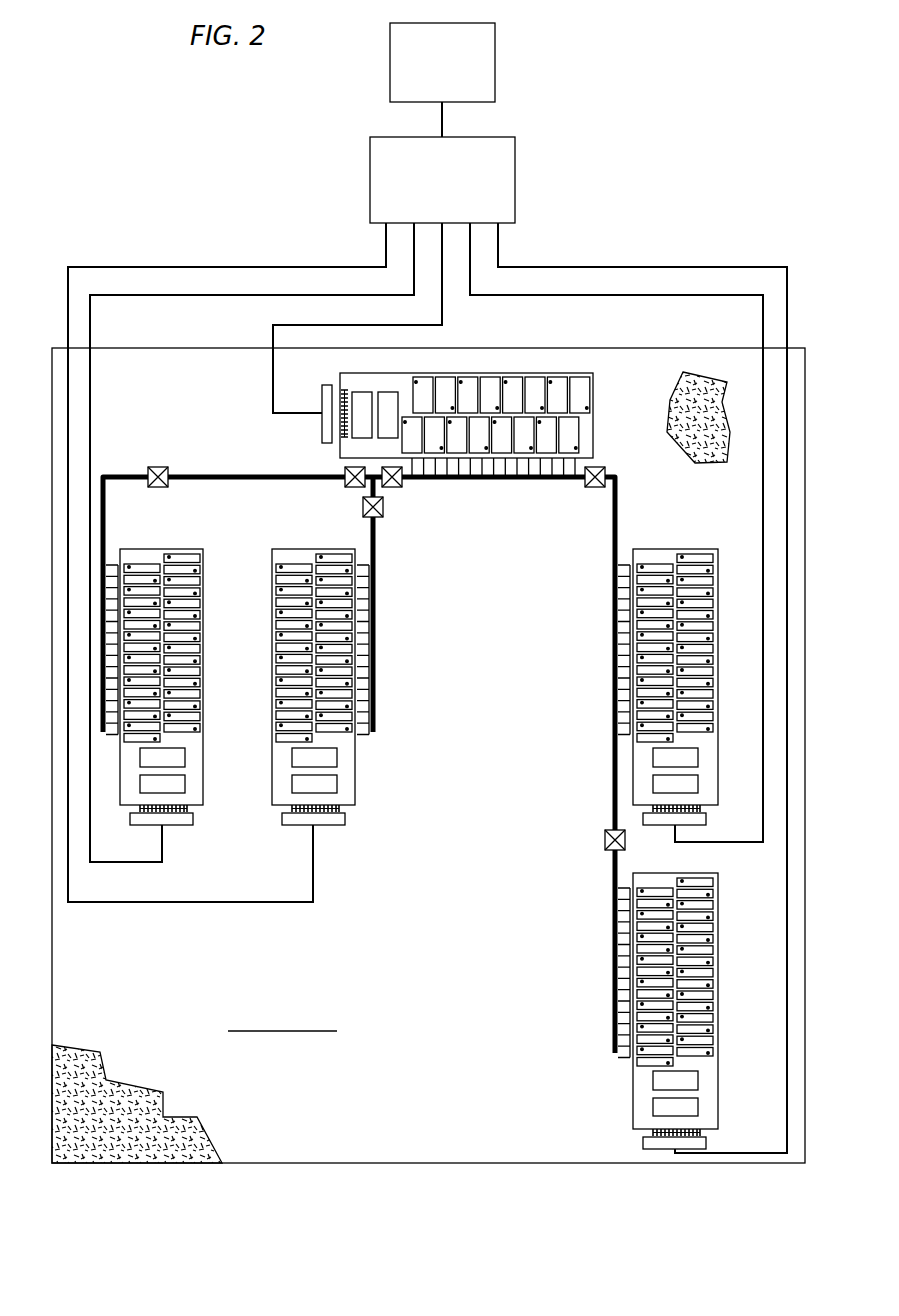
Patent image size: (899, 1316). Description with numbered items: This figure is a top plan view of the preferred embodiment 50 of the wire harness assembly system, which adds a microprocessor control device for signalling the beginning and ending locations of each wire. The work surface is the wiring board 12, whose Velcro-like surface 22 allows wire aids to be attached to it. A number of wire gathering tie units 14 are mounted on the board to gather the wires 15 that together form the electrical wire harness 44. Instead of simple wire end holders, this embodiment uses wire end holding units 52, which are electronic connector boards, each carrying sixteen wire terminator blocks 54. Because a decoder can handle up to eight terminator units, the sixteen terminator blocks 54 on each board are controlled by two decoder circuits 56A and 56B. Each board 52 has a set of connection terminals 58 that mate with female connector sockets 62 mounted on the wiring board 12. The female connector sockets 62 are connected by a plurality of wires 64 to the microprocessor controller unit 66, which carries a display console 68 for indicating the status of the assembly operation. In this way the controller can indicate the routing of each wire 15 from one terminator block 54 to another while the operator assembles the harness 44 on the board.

The wiring board 12 is at (307, 1163).
The wire gathering tie units 14 is at (166, 470).
The wires 15 is at (111, 565).
The Velcro-like surface 22 is at (188, 1153).
The electrical wire harness 44 is at (617, 502).
The preferred embodiment 50 is at (188, 340).
The wire end holding units 52 is at (590, 430).
The wire terminator blocks 54 is at (197, 558).
The decoder circuit 56A is at (360, 392).
The decoder circuit 56B is at (388, 392).
The connection terminals 58 is at (340, 443).
The female connector sockets 62 is at (324, 385).
The wires 64 is at (588, 266).
The microprocessor controller unit 66 is at (515, 144).
The display console 68 is at (495, 30).